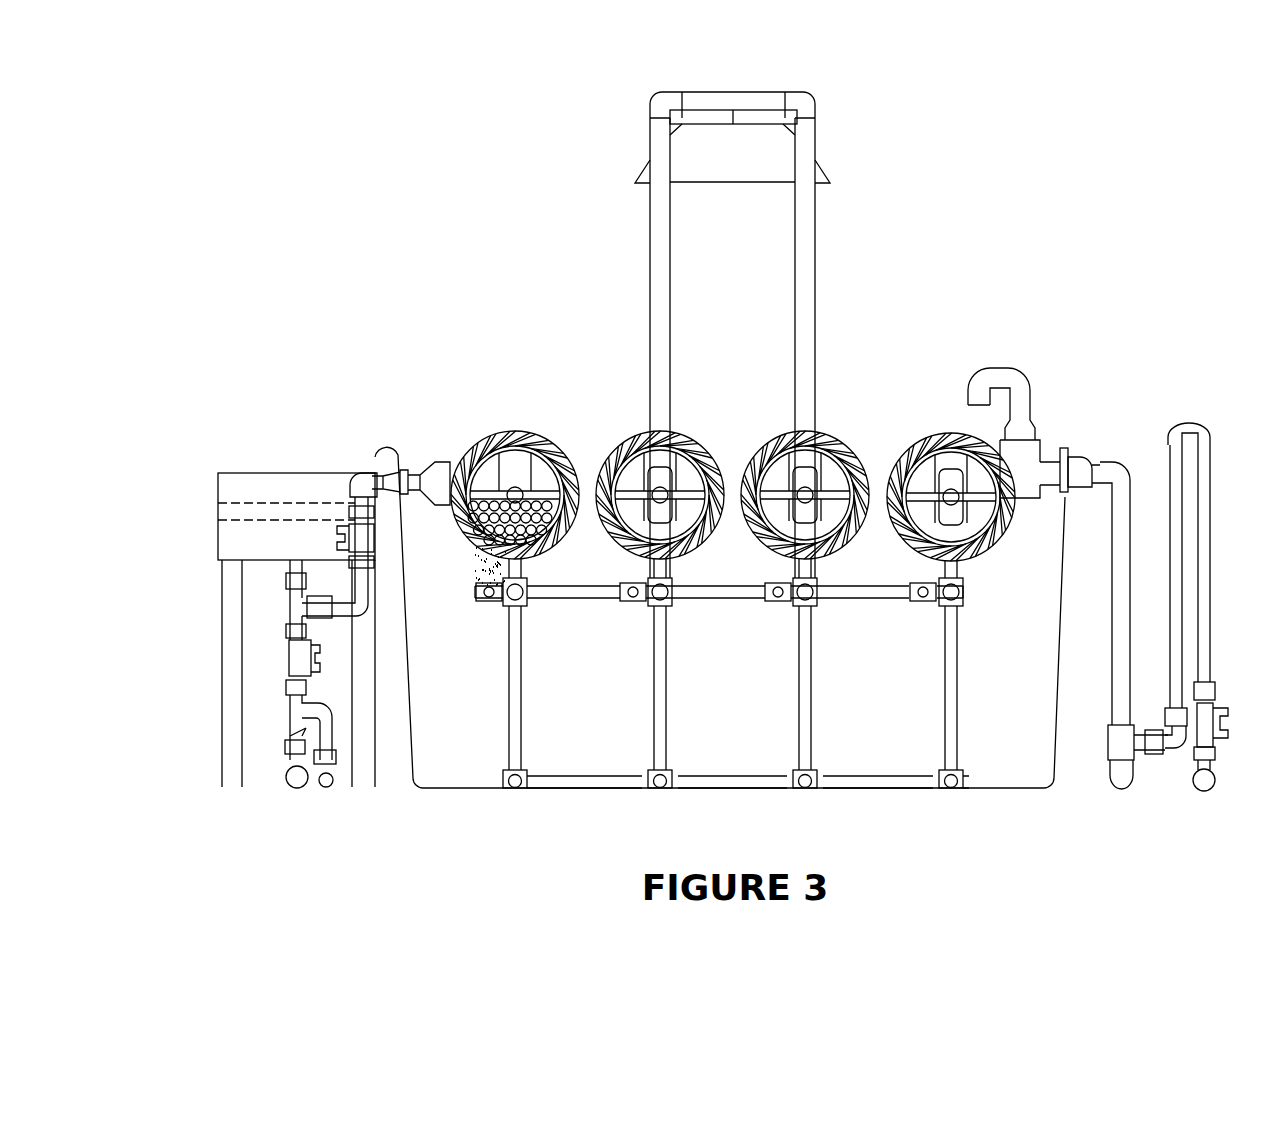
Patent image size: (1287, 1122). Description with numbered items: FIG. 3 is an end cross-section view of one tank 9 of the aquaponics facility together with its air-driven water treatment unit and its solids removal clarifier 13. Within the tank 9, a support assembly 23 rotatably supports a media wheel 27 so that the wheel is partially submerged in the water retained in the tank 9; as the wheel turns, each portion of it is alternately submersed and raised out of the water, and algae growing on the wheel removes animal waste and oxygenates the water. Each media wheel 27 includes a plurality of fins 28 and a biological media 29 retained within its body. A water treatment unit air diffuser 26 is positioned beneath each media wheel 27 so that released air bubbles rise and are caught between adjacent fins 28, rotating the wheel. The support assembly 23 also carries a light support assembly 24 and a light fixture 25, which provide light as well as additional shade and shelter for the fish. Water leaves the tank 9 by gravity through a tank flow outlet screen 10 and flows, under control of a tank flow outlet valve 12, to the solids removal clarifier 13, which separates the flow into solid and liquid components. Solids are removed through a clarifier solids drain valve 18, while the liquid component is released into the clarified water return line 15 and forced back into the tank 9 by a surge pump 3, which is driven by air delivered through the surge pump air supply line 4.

The surge pump 3 is at (1112, 686).
The surge pump air supply line 4 is at (1211, 541).
The tank 9 is at (1083, 452).
The tank flow outlet screen 10 is at (440, 464).
The tank flow outlet valve 12 is at (350, 553).
The solids removal clarifier 13 is at (277, 473).
The clarified water return line 15 is at (1110, 780).
The clarifier solids drain valve 18 is at (290, 663).
The support assembly 23 is at (800, 682).
The light support assembly 24 is at (818, 302).
The light fixture 25 is at (740, 186).
The water treatment unit air diffuser 26 is at (489, 601).
The media wheel 27 is at (519, 432).
The fin 28 is at (570, 453).
The biological media 29 is at (550, 498).